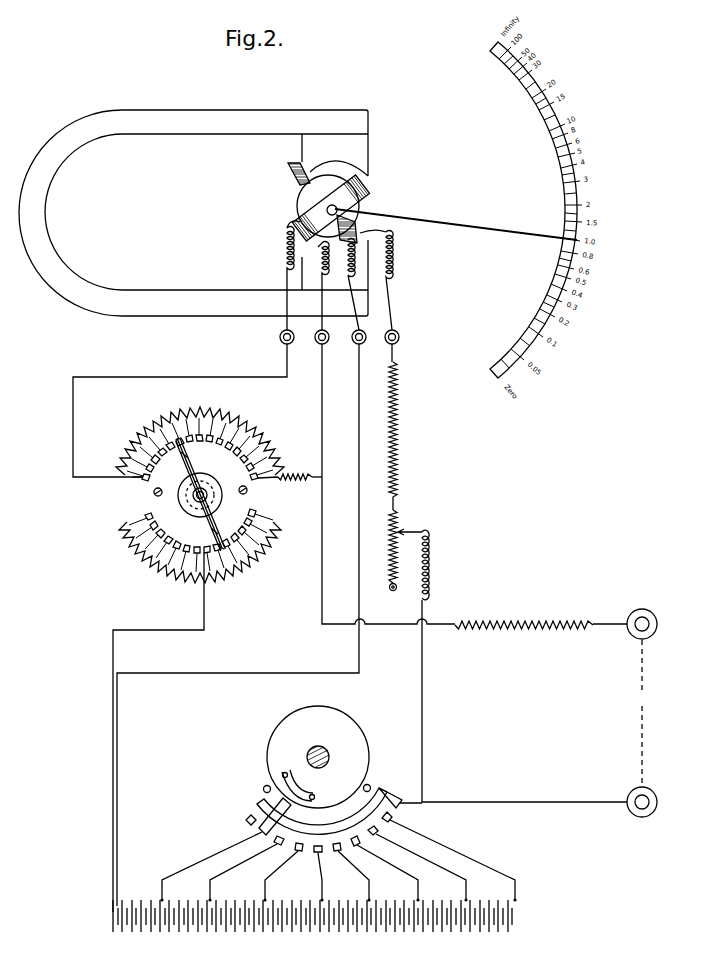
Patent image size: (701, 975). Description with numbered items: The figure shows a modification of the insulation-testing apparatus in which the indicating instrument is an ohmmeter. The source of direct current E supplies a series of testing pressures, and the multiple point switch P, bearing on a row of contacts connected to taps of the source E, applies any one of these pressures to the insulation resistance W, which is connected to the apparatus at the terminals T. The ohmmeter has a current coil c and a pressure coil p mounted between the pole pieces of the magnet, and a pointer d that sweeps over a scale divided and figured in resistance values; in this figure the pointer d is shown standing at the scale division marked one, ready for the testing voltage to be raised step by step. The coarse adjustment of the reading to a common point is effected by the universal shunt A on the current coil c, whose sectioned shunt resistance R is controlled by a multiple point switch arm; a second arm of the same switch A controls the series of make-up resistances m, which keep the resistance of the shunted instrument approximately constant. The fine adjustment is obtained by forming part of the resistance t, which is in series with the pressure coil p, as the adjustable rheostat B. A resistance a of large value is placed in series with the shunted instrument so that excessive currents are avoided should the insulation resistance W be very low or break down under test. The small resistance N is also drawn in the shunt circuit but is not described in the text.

The current coil c is at (352, 184).
The pointer d is at (456, 222).
The pressure coil p is at (362, 234).
The resistance t is at (402, 467).
The adjustable rheostat B is at (419, 564).
The resistance a is at (524, 613).
The terminals T is at (642, 716).
The insulation resistance W is at (642, 713).
The shunt resistance R is at (196, 479).
The universal shunt switch A is at (120, 489).
The resistance N is at (285, 468).
The make-up resistances m is at (200, 547).
The multiple point switch P is at (306, 757).
The source of direct current E is at (312, 928).